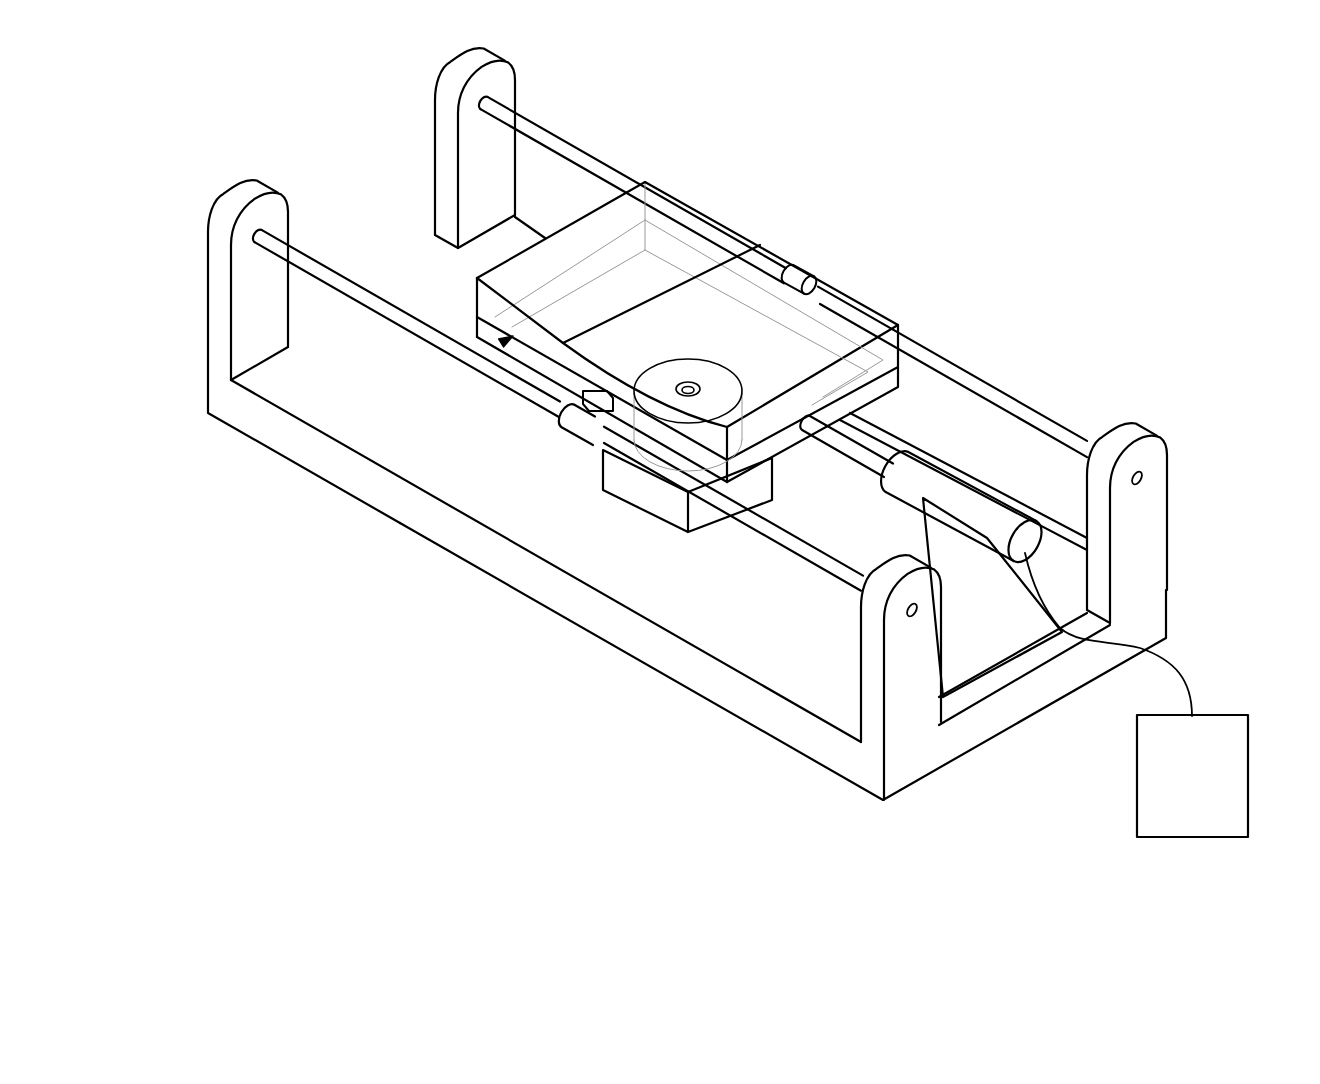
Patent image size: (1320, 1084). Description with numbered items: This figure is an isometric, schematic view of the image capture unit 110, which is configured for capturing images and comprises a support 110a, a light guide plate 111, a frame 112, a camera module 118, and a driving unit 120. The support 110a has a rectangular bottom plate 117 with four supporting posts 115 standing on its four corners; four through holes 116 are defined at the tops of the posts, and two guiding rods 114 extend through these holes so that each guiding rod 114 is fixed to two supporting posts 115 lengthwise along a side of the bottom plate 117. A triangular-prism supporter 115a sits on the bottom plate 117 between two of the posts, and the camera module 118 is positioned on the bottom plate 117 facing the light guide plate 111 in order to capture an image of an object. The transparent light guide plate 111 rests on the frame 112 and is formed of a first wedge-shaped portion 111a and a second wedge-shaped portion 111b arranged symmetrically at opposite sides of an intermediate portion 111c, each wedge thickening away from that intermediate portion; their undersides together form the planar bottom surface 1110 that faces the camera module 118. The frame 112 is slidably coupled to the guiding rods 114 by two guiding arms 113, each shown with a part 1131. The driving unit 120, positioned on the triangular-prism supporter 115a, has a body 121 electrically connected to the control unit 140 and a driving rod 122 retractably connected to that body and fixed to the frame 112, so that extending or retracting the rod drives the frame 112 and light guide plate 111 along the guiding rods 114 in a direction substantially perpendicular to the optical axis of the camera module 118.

The image capture unit 110 is at (961, 150).
The support 110a is at (245, 405).
The light guide plate 111 is at (881, 236).
The first wedge-shaped portion 111a is at (634, 213).
The second wedge-shaped portion 111b is at (760, 380).
The intermediate portion 111c is at (660, 323).
The bottom surface 1110 is at (501, 343).
The frame 112 is at (870, 400).
The guiding arm 113 is at (508, 528).
The fixing bracket 1131 is at (592, 437).
The guiding rod 114 is at (614, 344).
The supporting post 115 is at (247, 196).
The triangular-prism supporter 115a is at (974, 640).
The through hole 116 is at (257, 233).
The bottom plate 117 is at (788, 647).
The camera module 118 is at (657, 493).
The driving unit 120 is at (1153, 396).
The body 121 is at (943, 488).
The driving rod 122 is at (862, 452).
The control unit 140 is at (1218, 715).